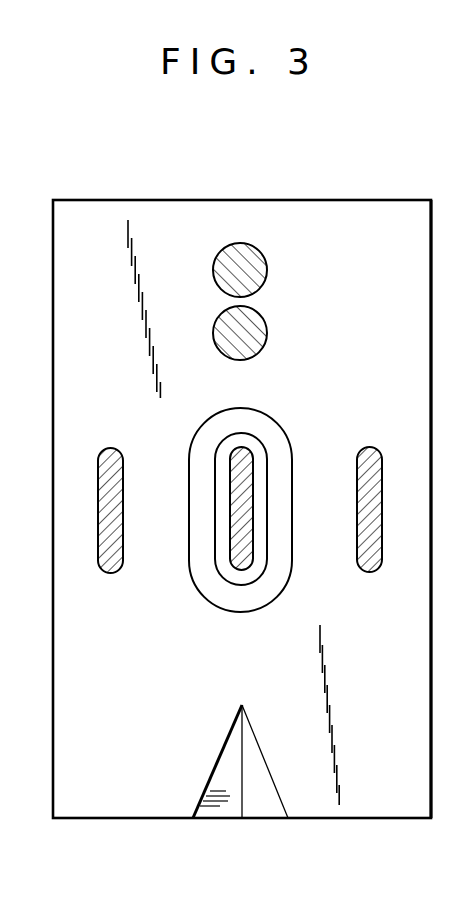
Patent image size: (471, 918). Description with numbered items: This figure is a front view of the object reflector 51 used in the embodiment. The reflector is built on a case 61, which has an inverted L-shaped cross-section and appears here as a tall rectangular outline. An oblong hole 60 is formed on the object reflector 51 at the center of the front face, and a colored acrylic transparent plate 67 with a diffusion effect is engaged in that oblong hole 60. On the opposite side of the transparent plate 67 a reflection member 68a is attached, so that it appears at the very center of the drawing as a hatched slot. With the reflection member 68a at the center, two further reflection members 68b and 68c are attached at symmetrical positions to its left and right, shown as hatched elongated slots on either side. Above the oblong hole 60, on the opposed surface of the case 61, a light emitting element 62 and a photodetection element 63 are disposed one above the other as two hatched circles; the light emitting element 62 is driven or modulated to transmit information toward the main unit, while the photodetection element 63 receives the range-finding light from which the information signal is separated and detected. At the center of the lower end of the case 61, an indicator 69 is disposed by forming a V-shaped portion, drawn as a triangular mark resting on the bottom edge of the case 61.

The object reflector 51 is at (334, 190).
The case 61 is at (433, 281).
The light emitting element 62 is at (267, 263).
The photodetection element 63 is at (267, 328).
The oblong hole 60 is at (191, 531).
The transparent plate 67 is at (283, 440).
The reflection member 68a is at (253, 556).
The reflection member 68b is at (110, 446).
The reflection member 68c is at (369, 574).
The indicator 69 is at (258, 789).